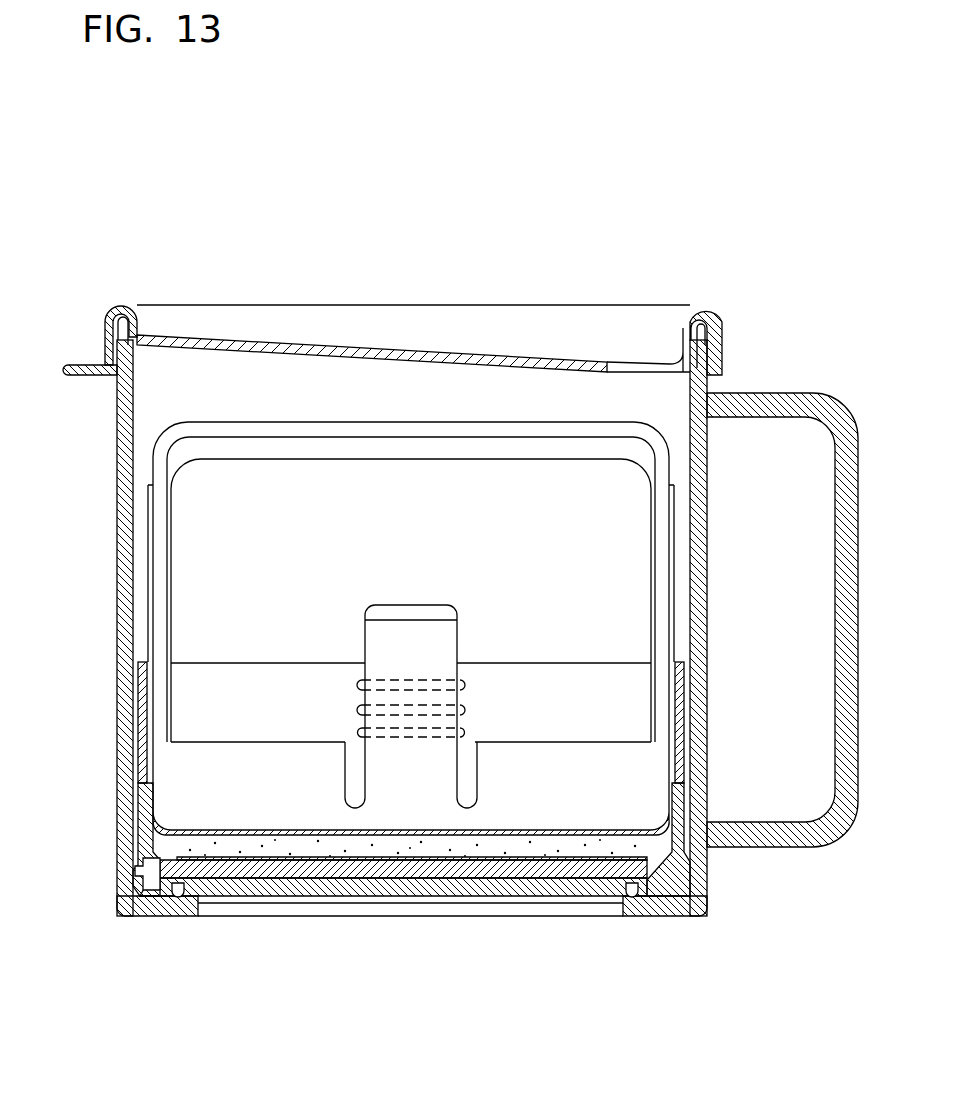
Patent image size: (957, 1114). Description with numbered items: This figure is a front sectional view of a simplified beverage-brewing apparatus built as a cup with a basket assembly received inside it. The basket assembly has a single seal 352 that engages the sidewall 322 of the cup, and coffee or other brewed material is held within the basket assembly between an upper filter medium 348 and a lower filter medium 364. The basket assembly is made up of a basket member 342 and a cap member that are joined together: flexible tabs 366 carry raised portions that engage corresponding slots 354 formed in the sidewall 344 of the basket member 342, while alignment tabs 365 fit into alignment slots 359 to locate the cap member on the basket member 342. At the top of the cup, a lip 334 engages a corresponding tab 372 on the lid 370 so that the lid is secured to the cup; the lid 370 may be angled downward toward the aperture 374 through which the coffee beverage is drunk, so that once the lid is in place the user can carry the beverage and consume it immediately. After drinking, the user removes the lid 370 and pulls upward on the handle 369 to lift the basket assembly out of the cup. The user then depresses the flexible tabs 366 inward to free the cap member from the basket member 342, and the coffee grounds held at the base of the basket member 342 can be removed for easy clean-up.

The sidewall 322 is at (125, 573).
The lip 334 is at (122, 347).
The basket member 342 is at (142, 688).
The sidewall 344 is at (678, 735).
The filter medium 348 is at (522, 857).
The single seal 352 is at (150, 870).
The slots 354 is at (358, 732).
The alignment slots 359 is at (153, 778).
The filter medium 364 is at (240, 832).
The alignment tabs 365 is at (153, 737).
The flexible tabs 366 is at (415, 608).
The handle 369 is at (425, 427).
The lid 370 is at (117, 313).
The tab 372 is at (707, 363).
The aperture 374 is at (627, 367).